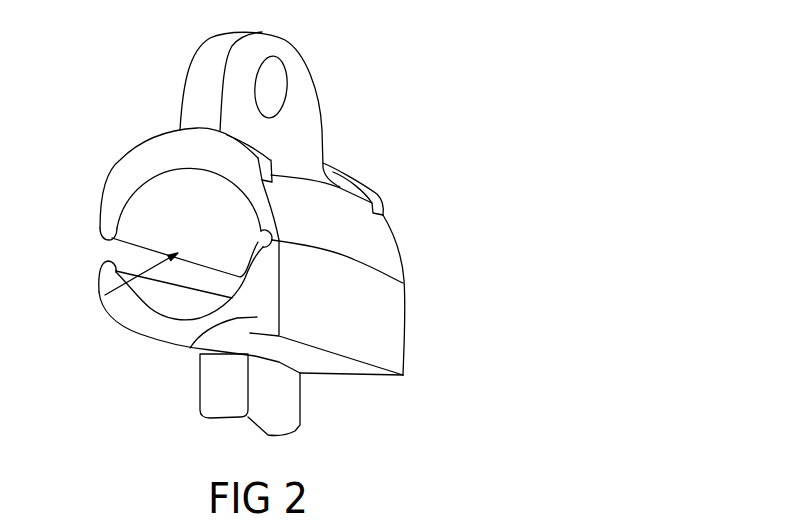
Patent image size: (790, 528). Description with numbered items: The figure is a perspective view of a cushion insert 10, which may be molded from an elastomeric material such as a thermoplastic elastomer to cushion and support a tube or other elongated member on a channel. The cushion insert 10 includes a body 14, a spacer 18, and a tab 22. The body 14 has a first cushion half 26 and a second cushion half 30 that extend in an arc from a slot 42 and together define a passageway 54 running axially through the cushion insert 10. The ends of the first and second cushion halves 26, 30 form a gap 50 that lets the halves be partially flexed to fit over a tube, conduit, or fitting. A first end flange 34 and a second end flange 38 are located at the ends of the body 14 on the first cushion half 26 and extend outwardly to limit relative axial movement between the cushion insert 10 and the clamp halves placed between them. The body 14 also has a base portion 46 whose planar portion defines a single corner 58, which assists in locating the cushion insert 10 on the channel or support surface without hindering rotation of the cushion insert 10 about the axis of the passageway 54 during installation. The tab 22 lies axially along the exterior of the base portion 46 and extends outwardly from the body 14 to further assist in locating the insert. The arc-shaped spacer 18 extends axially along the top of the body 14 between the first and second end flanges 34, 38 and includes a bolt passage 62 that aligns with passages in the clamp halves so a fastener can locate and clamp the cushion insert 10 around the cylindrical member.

The cushion insert 10 is at (412, 154).
The body 14 is at (390, 323).
The spacer 18 is at (272, 43).
The tab 22 is at (287, 403).
The first cushion half 26 is at (108, 220).
The second cushion half 30 is at (140, 320).
The first end flange 34 is at (145, 153).
The second end flange 38 is at (378, 210).
The slot 42 is at (403, 283).
The base portion 46 is at (190, 348).
The gap 50 is at (118, 252).
The passageway 54 is at (108, 305).
The single corner 58 is at (279, 335).
The bolt passage 62 is at (270, 87).